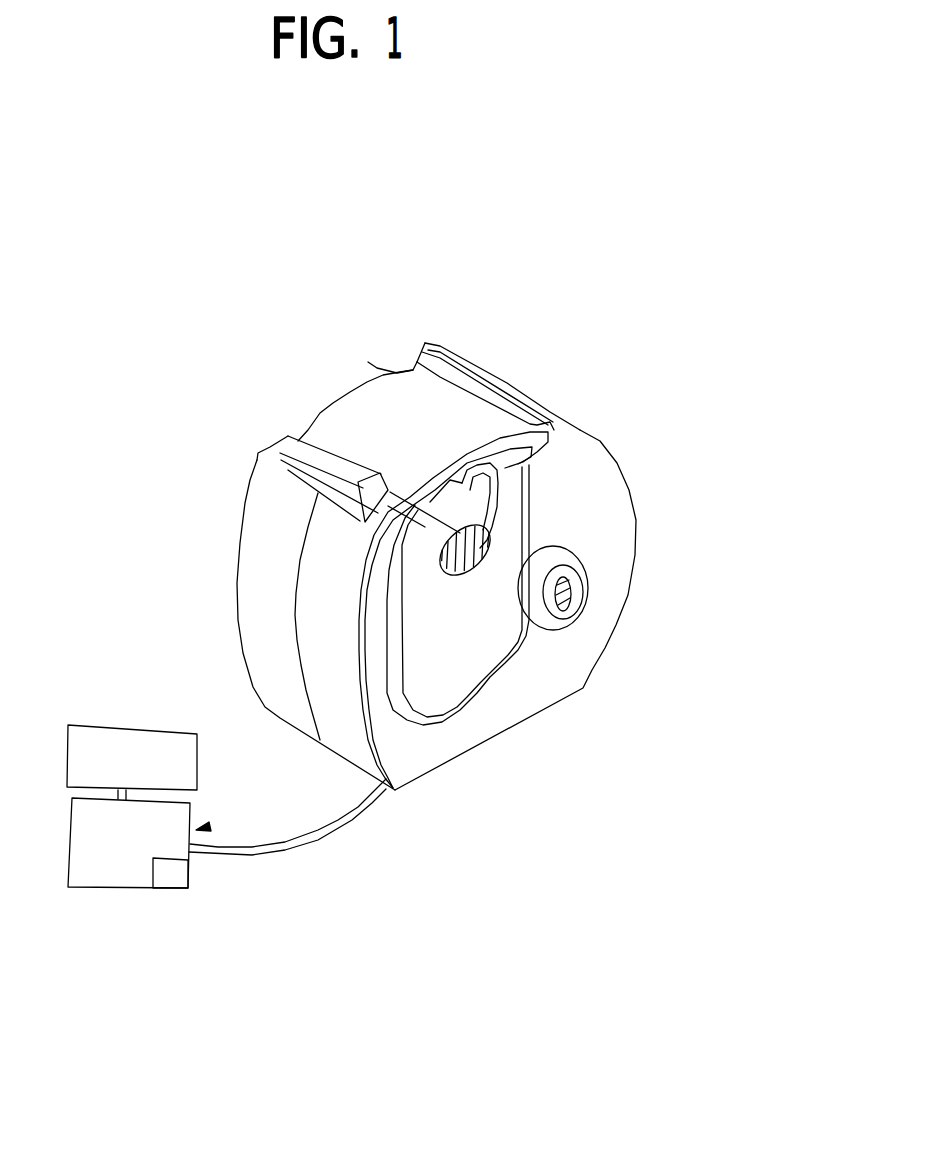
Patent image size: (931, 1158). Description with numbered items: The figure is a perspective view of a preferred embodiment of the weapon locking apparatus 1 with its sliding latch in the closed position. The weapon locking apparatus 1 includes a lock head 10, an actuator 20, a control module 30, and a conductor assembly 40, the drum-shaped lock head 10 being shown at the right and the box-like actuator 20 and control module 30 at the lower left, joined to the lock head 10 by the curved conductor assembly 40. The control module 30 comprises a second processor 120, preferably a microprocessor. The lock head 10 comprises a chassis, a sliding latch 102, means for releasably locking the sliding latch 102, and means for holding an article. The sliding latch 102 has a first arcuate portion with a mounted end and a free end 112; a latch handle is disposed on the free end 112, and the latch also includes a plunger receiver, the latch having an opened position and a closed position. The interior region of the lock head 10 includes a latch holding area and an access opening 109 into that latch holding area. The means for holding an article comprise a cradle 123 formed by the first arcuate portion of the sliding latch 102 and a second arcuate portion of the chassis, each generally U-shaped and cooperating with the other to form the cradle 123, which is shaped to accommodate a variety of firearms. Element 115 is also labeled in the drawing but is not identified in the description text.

The weapon locking apparatus 1 is at (623, 430).
The lock head 10 is at (495, 739).
The sliding latch 102 is at (352, 390).
The access opening 109 is at (368, 362).
The tape cartridge 115 is at (297, 440).
The free end 112 is at (398, 523).
The cradle 123 is at (450, 530).
The actuator 20 is at (122, 726).
The control module 30 is at (208, 826).
The conductor assembly 40 is at (323, 837).
The second processor 120 is at (172, 893).